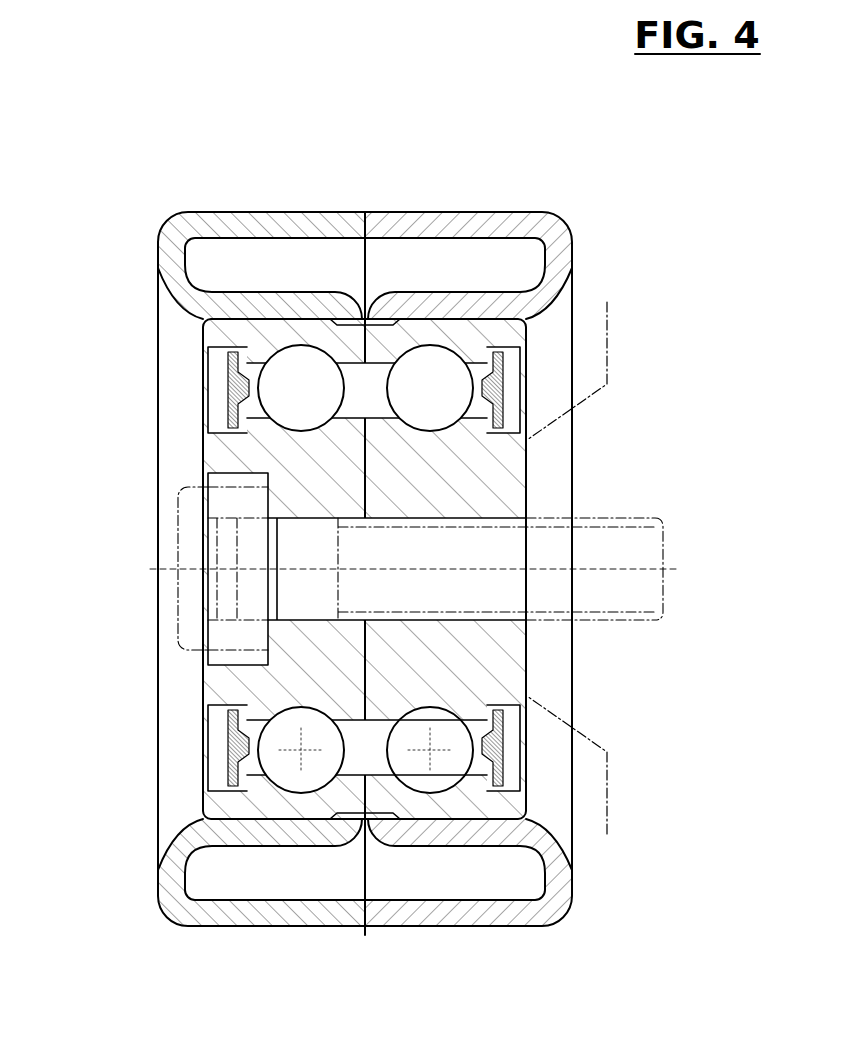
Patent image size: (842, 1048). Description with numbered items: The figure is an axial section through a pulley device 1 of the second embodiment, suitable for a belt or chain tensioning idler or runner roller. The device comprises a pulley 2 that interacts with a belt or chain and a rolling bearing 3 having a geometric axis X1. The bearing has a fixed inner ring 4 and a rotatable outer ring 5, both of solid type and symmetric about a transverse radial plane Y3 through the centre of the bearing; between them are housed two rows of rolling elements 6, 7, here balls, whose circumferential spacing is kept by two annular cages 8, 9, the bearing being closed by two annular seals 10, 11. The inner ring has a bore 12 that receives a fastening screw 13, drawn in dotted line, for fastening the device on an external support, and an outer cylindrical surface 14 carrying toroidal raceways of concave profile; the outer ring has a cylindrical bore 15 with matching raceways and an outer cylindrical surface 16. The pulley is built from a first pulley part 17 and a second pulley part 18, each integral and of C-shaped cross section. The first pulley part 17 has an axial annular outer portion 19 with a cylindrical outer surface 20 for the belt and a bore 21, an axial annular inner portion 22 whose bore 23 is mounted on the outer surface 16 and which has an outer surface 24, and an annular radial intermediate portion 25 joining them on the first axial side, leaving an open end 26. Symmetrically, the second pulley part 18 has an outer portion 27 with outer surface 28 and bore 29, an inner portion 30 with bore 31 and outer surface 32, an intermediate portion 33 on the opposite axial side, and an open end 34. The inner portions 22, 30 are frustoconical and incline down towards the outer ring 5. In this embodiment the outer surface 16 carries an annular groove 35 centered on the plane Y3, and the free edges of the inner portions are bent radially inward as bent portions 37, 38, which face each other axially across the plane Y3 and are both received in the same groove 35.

The pulley device 1 is at (163, 200).
The pulley 2 is at (572, 205).
The rolling bearing 3 is at (535, 384).
The inner ring 4 is at (510, 660).
The outer ring 5 is at (575, 338).
The rolling elements 6 is at (301, 388).
The rolling elements 7 is at (430, 388).
The annular cage 8 is at (207, 387).
The annular cage 9 is at (507, 742).
The annular seal 10 is at (230, 768).
The annular seal 11 is at (575, 420).
The bore 12 is at (265, 593).
The fastening screw 13 is at (668, 522).
The outer cylindrical surface 14 is at (207, 433).
The cylindrical bore 15 is at (258, 742).
The outer cylindrical surface 16 is at (250, 825).
The first pulley part 17 is at (226, 200).
The second pulley part 18 is at (502, 200).
The axial annular outer portion 19 is at (345, 290).
The cylindrical outer surface 20 is at (257, 926).
The cylindrical inner surface 21 is at (258, 898).
The axial annular inner portion 22 is at (285, 300).
The inner surface 23 is at (207, 337).
The outer surface 24 is at (195, 256).
The annular radial intermediate portion 25 is at (158, 235).
The open end 26 is at (207, 362).
The axial annular outer portion 27 is at (452, 227).
The cylindrical outer surface 28 is at (520, 928).
The cylindrical inner surface 29 is at (463, 847).
The axial annular inner portion 30 is at (390, 300).
The inner surface 31 is at (493, 795).
The outer surface 32 is at (577, 843).
The annular radial intermediate portion 33 is at (573, 240).
The open end 34 is at (380, 862).
The annular groove 35 is at (410, 456).
The bent portion 37 is at (347, 840).
The bent portion 38 is at (388, 843).
The geometric axis X1 is at (430, 583).
The transverse radial plane Y3 is at (389, 945).